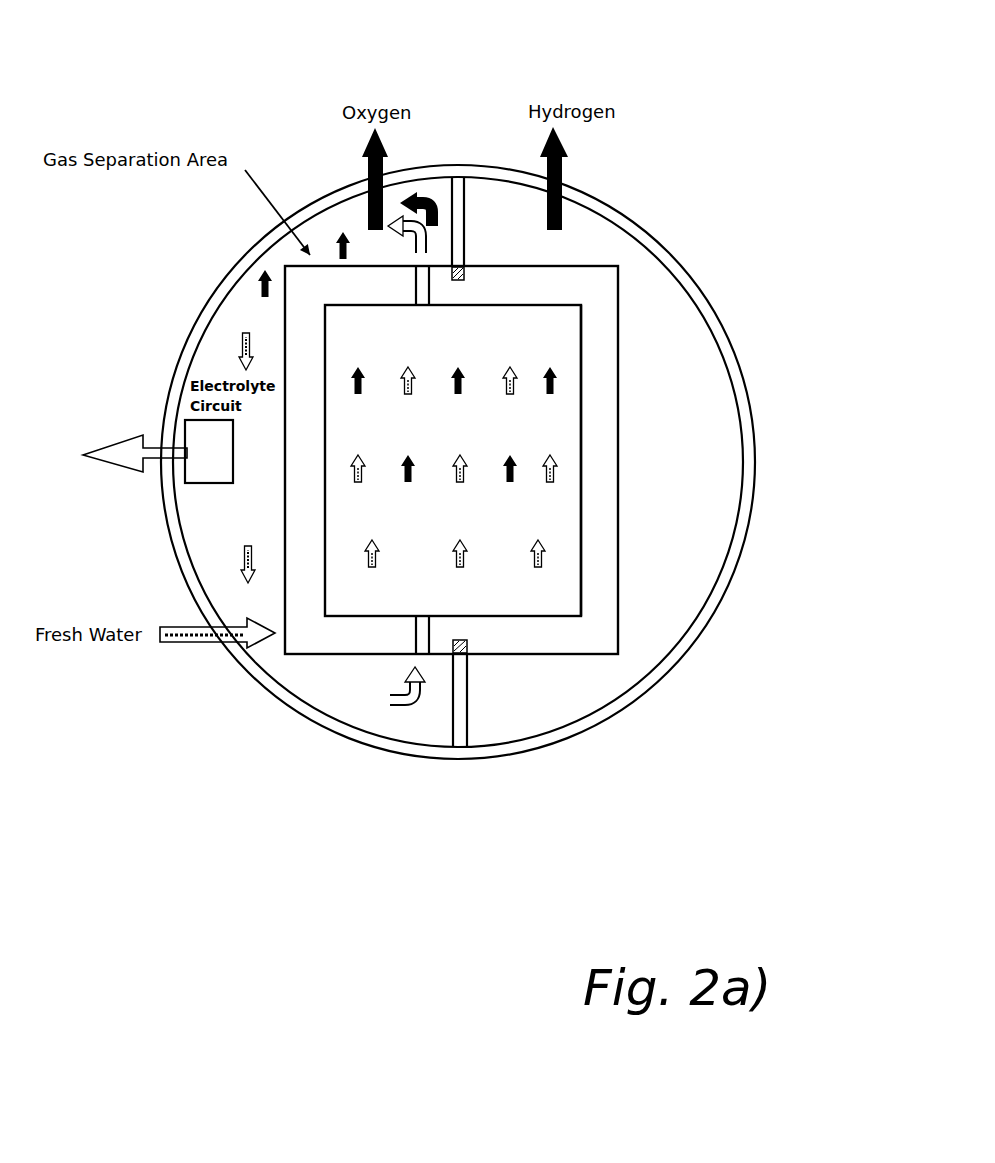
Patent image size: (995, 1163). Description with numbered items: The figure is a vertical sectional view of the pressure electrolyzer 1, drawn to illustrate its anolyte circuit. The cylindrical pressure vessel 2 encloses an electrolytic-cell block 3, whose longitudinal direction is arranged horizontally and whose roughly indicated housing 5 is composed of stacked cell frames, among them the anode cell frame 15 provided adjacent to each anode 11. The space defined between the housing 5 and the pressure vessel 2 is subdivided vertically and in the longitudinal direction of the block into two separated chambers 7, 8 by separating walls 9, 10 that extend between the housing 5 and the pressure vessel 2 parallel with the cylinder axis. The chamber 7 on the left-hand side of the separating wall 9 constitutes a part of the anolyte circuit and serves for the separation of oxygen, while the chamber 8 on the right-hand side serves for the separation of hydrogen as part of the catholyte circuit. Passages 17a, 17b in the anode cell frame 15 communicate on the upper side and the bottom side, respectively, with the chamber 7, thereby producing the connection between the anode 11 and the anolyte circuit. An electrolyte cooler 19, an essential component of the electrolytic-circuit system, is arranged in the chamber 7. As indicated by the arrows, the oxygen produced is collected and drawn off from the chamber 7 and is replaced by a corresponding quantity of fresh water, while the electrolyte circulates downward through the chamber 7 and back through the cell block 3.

The pressure electrolyzer 1 is at (752, 713).
The pressure vessel 2 is at (673, 247).
The electrolytic-cell block 3 is at (627, 370).
The housing 5 is at (595, 332).
The chamber 7 is at (224, 539).
The chamber 8 is at (694, 529).
The separating wall 9 is at (464, 262).
The separating wall 10 is at (469, 656).
The anode 11 is at (442, 531).
The anode cell frame 15 is at (602, 492).
The passage 17a is at (423, 285).
The passage 17b is at (422, 635).
The electrolyte cooler 19 is at (226, 469).